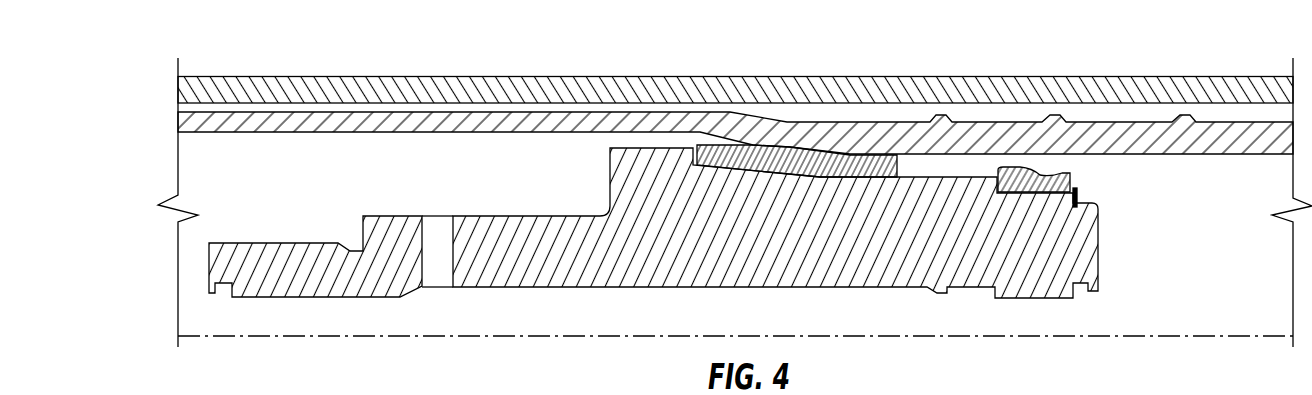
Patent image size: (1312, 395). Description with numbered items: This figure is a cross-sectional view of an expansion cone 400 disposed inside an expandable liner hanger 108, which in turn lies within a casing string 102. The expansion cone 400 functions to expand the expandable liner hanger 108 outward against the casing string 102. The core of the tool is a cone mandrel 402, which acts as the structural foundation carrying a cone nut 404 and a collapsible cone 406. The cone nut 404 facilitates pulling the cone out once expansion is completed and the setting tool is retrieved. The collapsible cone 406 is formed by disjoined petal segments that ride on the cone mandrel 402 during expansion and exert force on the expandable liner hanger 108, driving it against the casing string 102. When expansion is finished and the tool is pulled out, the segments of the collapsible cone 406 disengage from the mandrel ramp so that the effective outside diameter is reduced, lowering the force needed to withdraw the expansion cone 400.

The casing string 102 is at (534, 80).
The expandable liner hanger 108 is at (1262, 140).
The expansion cone 400 is at (701, 182).
The cone mandrel 402 is at (638, 287).
The cone nut 404 is at (1047, 178).
The collapsible cone 406 is at (823, 167).